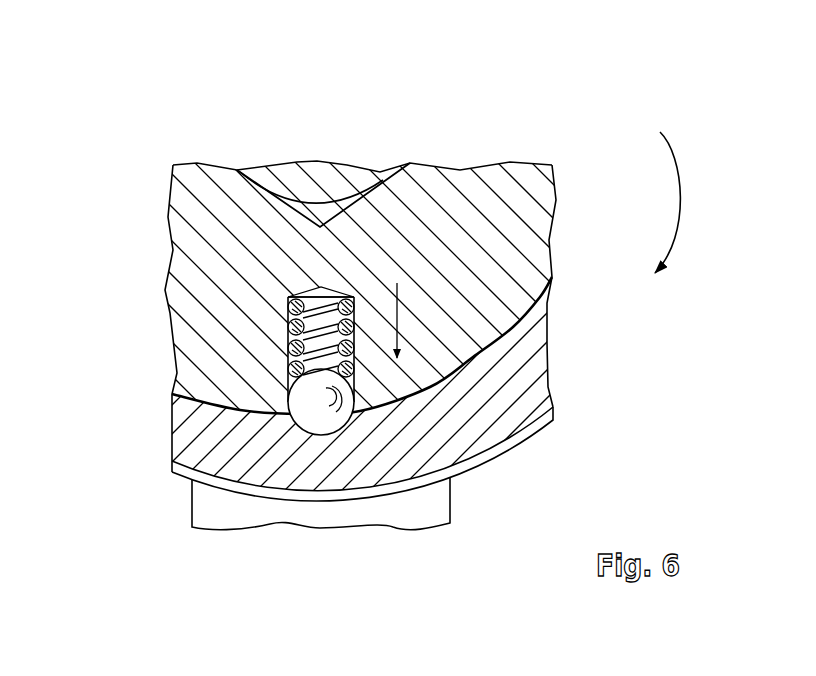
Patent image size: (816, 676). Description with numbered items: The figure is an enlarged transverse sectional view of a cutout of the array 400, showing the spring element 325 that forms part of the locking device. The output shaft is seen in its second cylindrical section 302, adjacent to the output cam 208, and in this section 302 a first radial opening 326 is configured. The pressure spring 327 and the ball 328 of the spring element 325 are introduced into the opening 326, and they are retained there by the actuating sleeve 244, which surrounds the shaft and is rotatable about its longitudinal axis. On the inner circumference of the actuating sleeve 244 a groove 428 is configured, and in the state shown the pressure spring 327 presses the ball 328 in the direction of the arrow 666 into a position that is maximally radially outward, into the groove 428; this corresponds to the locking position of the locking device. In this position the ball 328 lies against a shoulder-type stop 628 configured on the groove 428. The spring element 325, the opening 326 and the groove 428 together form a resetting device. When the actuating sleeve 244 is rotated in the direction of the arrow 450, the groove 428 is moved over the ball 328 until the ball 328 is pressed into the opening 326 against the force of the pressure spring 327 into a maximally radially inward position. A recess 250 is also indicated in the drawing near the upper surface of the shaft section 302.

The array 400 is at (93, 181).
The second cylindrical section 302 is at (510, 228).
The recess 250 is at (297, 183).
The spring element 325 is at (340, 280).
The pressure spring 327 is at (288, 300).
The first radial opening 326 is at (272, 338).
The ball 328 is at (288, 374).
The shoulder-type stop 628 is at (273, 423).
The arrow 666 is at (400, 315).
The actuating sleeve 244 is at (497, 422).
The groove 428 is at (395, 393).
The output cam 208 is at (213, 504).
The arrow 450 is at (680, 197).